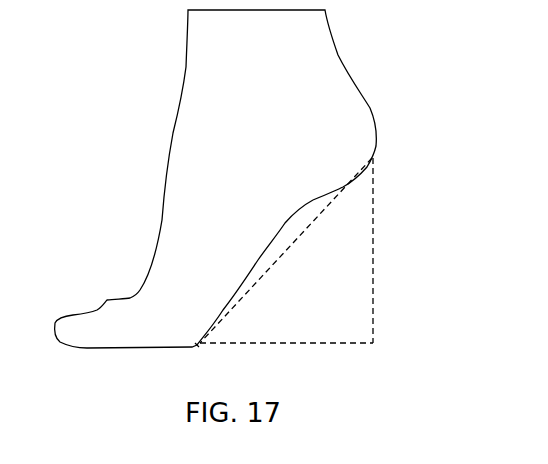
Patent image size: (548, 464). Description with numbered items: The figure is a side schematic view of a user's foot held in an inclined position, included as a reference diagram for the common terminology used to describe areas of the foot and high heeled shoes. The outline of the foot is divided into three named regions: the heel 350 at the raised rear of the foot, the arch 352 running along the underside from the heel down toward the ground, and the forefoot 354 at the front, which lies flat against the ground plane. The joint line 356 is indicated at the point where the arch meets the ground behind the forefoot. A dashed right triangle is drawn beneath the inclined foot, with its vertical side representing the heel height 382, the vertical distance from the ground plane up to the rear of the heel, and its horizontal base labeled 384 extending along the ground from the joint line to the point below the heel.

The heel 350 is at (363, 138).
The arch 352 is at (270, 234).
The forefoot 354 is at (140, 338).
The joint line 356 is at (197, 339).
The heel height 382 is at (374, 259).
The base length dimension 384 is at (323, 361).